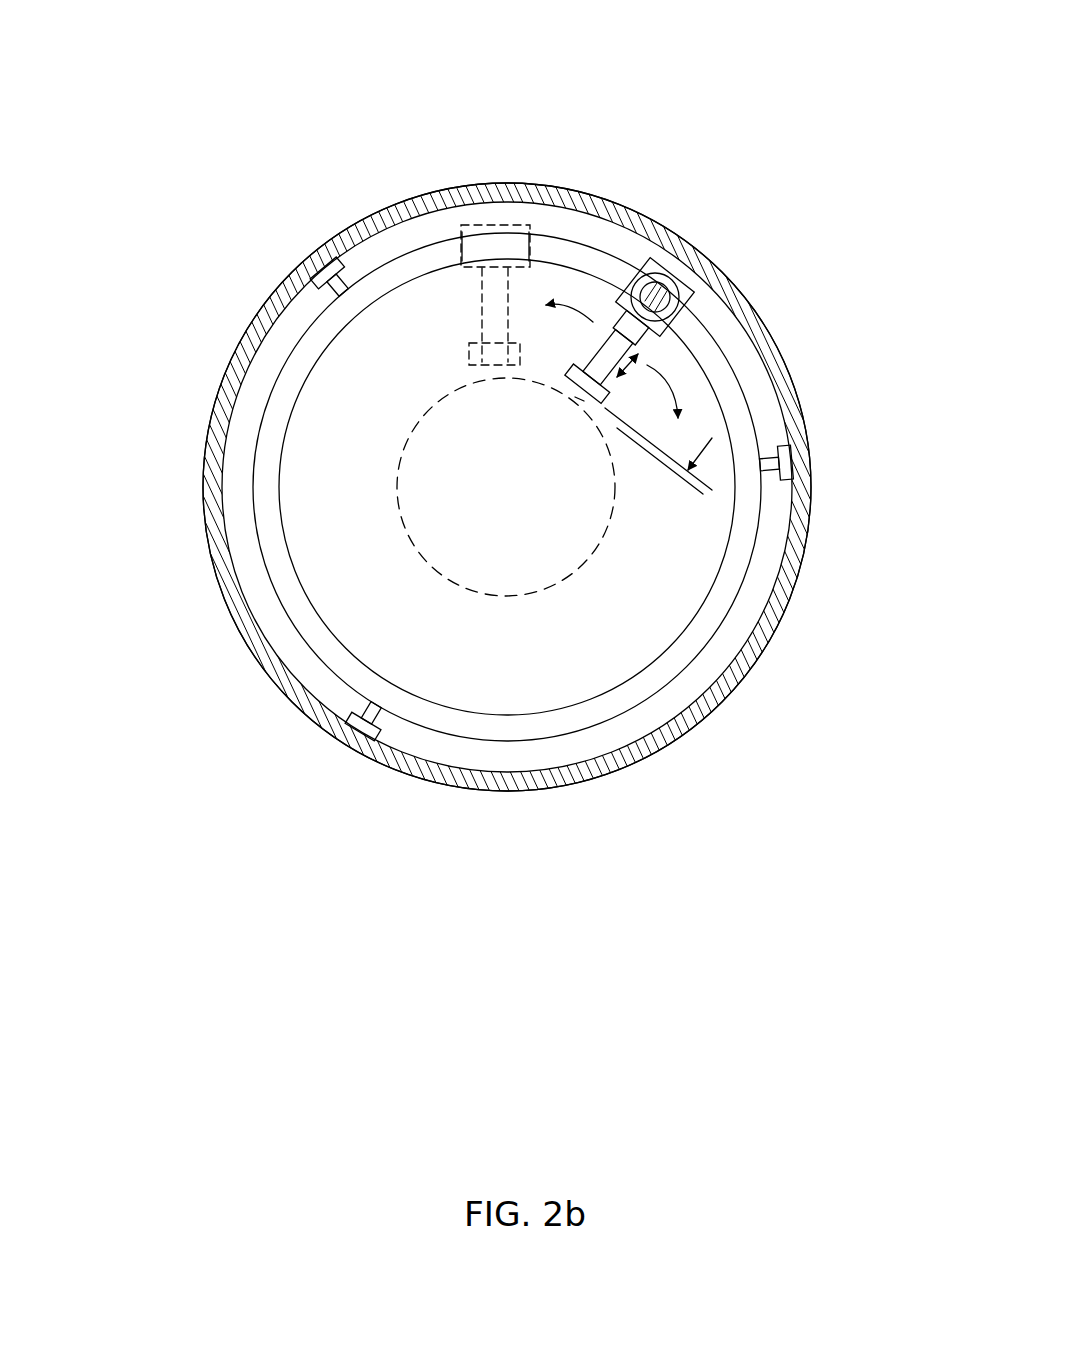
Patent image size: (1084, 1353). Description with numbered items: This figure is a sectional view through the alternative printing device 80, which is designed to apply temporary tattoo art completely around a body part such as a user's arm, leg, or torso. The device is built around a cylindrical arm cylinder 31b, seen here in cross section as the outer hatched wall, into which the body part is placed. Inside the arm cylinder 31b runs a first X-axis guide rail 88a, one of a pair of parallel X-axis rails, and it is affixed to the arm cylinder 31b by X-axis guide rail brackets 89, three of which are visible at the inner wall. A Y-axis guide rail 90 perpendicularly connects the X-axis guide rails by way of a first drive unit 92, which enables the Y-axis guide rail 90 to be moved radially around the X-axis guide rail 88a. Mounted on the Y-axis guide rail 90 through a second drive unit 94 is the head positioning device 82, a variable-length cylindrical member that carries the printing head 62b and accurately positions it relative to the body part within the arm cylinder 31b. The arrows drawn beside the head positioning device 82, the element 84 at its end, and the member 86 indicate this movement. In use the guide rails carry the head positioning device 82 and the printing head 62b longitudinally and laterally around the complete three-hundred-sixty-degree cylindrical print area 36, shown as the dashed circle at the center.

The printing device 80 is at (190, 157).
The arm cylinder 31b is at (212, 428).
The first X-axis guide rail 88a is at (285, 562).
The X-axis guide rail bracket 89 is at (330, 270).
The print area 36 is at (436, 572).
The Y-axis guide rail 90 is at (687, 270).
The second drive unit 94 is at (678, 294).
The first drive unit 92 is at (657, 284).
The head positioning device 82 is at (613, 345).
The sensor head 84 is at (573, 352).
The printing head 62b is at (582, 393).
The guide rod 86 is at (680, 482).